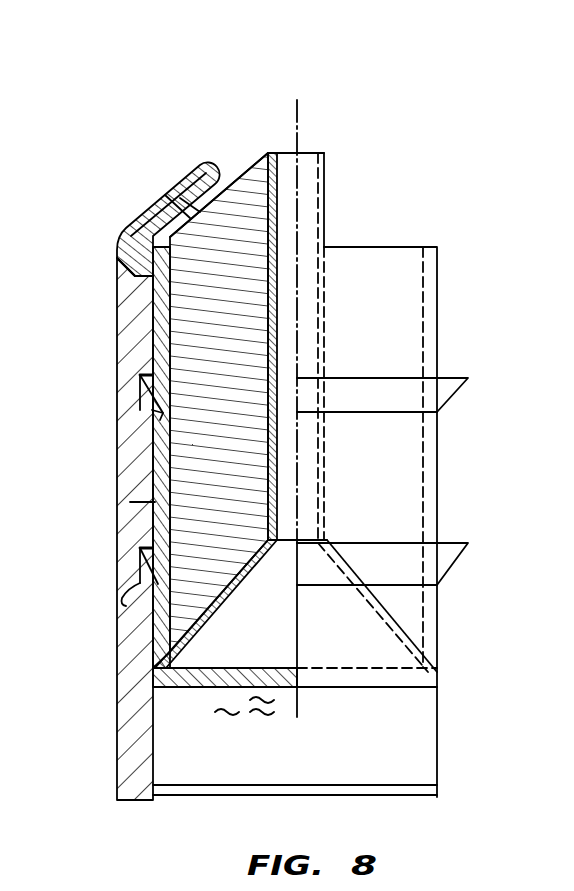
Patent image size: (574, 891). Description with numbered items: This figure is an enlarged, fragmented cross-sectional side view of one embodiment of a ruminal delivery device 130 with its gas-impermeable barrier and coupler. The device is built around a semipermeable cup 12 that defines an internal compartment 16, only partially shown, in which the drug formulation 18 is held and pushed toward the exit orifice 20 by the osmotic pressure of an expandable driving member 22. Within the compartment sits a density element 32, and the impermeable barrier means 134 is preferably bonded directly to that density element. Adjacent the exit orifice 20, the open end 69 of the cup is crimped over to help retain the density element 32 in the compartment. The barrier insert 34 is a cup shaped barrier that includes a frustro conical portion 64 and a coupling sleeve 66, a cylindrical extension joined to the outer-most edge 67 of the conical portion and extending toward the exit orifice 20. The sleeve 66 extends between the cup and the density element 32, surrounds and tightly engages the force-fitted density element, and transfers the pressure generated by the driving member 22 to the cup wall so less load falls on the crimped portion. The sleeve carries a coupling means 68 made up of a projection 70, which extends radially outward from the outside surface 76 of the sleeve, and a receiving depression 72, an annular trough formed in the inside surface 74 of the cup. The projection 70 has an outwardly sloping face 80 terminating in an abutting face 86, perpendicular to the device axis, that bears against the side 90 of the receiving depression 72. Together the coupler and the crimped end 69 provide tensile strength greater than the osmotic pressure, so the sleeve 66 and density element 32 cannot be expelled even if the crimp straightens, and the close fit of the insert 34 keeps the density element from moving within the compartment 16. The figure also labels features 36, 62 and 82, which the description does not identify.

The ruminal delivery device 130 is at (161, 55).
The semipermeable cup 12 is at (123, 227).
The open end of the semipermeable cup 69 is at (142, 212).
The density element 32 is at (160, 196).
The outer-most edge of the frustro conical portion 67 is at (214, 172).
The impermeable barrier means 134 is at (117, 258).
The coupling sleeve 66 is at (160, 462).
The exit orifice 20 is at (288, 153).
The tube wall 62 is at (328, 158).
The bore 36 is at (311, 309).
The barrier insert 34 is at (392, 259).
The abutting face 86 is at (448, 378).
The lower flange edge 82 is at (438, 433).
The frustro conical portion 64 is at (428, 650).
The side of the receiving depression 90 is at (147, 365).
The outwardly sloping face 80 is at (140, 397).
The outside surface of the sleeve 76 is at (160, 416).
The inside surface of the cup 74 is at (130, 502).
The coupling means 68 is at (152, 567).
The projection 70 is at (140, 572).
The receiving depression 72 is at (122, 604).
The internal compartment 16 is at (193, 721).
The drug formulation 18 is at (222, 722).
The expandable driving member 22 is at (183, 800).